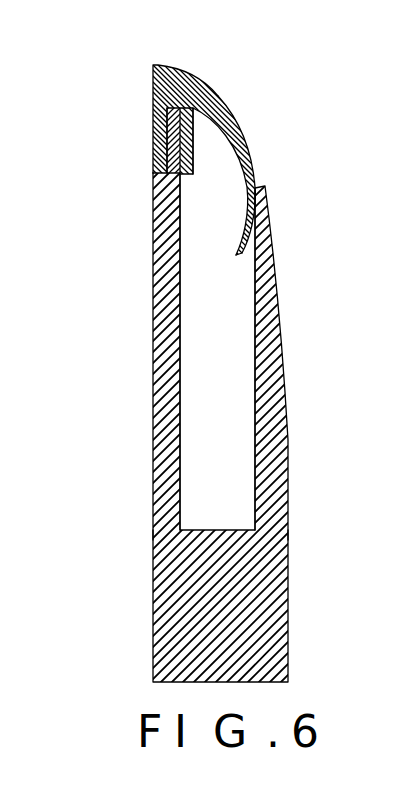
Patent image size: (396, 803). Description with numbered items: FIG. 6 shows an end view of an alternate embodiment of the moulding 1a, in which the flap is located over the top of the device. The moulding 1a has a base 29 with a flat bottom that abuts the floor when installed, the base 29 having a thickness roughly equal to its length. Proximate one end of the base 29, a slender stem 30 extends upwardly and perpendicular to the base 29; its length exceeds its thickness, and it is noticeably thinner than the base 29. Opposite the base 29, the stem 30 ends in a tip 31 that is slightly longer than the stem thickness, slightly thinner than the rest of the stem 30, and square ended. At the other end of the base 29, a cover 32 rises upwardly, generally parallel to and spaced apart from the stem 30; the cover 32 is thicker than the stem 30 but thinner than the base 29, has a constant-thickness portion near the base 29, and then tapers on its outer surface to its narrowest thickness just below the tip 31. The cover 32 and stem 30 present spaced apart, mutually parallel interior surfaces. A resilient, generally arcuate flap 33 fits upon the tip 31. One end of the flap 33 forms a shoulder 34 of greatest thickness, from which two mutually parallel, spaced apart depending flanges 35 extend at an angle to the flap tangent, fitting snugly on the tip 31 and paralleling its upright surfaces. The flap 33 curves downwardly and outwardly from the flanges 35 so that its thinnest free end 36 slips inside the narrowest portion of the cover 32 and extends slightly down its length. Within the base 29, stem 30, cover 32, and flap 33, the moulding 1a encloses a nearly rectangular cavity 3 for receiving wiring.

The housing assembly 1a is at (133, 66).
The base 29 is at (243, 630).
The stem 30 is at (165, 373).
The tip 31 is at (153, 186).
The cover 32 is at (281, 344).
The cavity 3 is at (228, 315).
The flap 33 is at (228, 112).
The shoulder 34 is at (168, 64).
The depending flanges 35 is at (156, 148).
The free end 36 is at (237, 253).